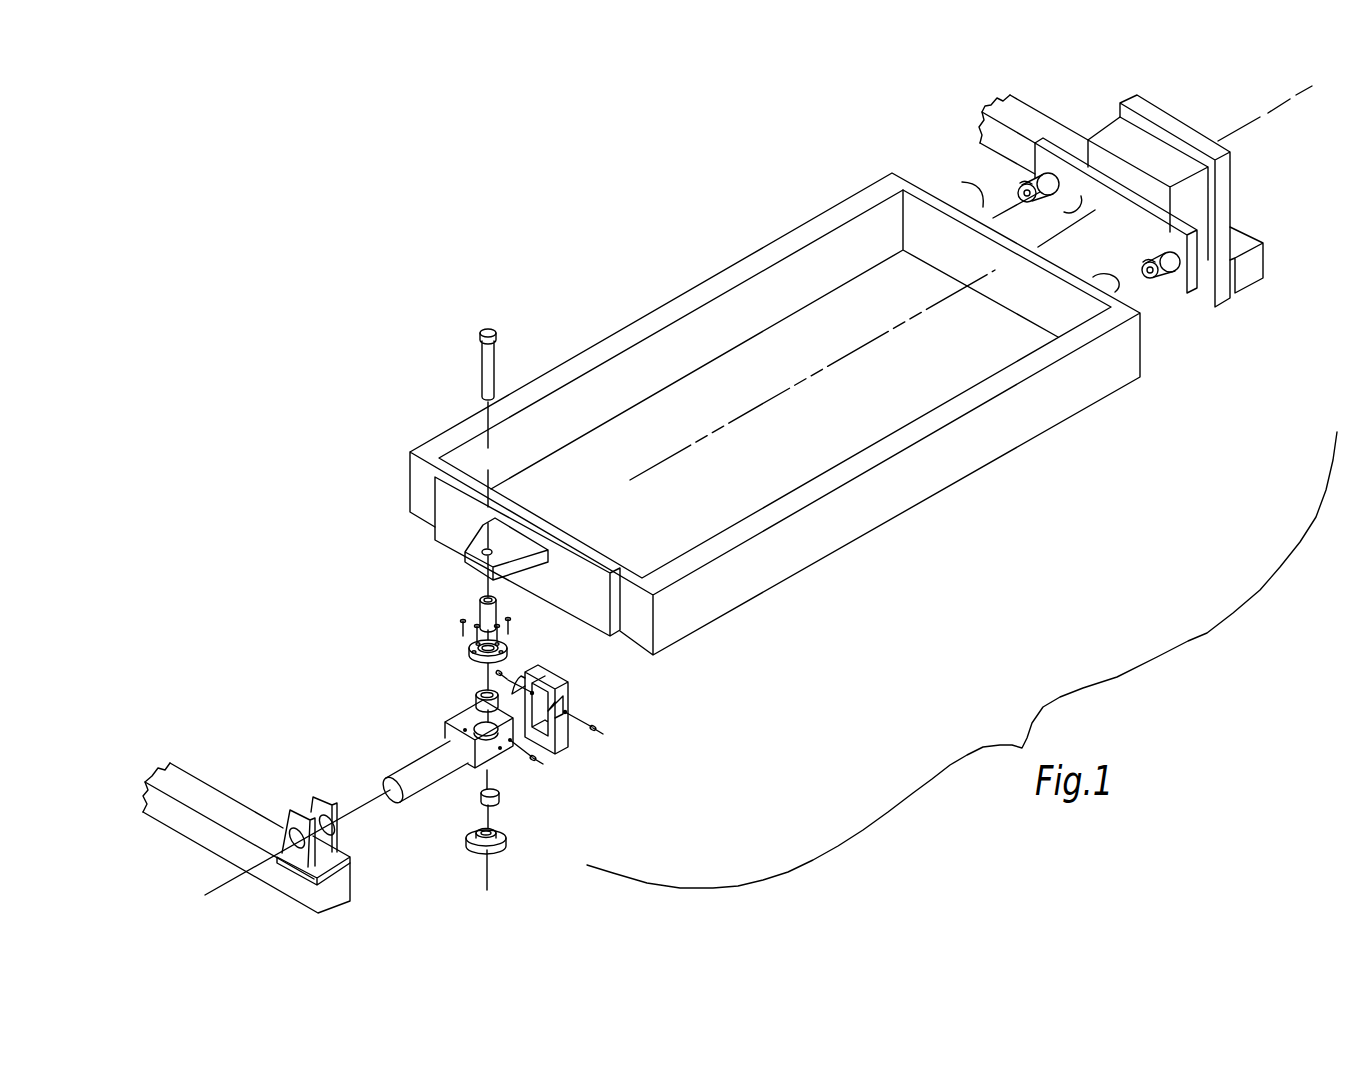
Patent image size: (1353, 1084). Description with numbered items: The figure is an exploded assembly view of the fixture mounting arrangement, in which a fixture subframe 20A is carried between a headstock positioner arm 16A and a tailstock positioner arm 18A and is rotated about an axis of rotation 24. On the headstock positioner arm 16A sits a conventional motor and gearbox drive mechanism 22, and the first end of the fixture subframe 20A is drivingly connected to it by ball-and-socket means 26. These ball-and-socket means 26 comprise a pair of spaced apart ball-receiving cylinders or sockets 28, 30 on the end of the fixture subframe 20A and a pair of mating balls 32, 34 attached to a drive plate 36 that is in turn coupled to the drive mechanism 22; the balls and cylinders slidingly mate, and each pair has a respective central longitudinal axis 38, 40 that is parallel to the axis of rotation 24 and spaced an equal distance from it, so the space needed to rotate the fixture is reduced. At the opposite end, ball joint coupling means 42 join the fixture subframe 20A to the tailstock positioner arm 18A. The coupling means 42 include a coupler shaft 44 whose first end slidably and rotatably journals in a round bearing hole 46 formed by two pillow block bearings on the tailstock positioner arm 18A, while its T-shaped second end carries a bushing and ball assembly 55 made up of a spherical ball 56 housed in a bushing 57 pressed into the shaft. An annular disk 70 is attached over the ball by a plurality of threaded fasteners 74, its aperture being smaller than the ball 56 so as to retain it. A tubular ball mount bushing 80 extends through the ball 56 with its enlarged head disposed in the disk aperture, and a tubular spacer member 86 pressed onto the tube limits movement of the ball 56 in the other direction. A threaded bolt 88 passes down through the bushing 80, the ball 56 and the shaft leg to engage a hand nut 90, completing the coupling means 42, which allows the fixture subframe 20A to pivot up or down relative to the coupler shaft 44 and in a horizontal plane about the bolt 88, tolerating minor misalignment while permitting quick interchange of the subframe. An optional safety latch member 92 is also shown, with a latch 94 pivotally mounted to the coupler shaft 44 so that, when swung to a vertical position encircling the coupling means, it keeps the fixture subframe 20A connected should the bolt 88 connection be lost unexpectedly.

The headstock positioner arm 16A is at (1020, 116).
The tailstock positioner arm 18A is at (163, 775).
The fixture subframe 20A is at (901, 518).
The motor and gearbox drive mechanism 22 is at (1198, 182).
The axis of rotation 24 is at (1248, 128).
The ball-and-socket means 26 is at (936, 126).
The ball-receiving cylinder 28 is at (1114, 272).
The ball-receiving cylinder 30 is at (988, 200).
The mating ball 32 is at (1160, 286).
The mating ball 34 is at (1020, 186).
The drive plate 36 is at (1068, 209).
The central longitudinal axis 38 is at (1140, 283).
The central longitudinal axis 40 is at (989, 195).
The ball joint coupling means 42 is at (382, 642).
The coupler shaft 44 is at (382, 756).
The round bearing hole 46 is at (278, 830).
The bushing and ball assembly 55 is at (476, 694).
The ball 56 is at (507, 687).
The bushing 57 is at (477, 701).
The annular disk 70 is at (469, 650).
The threaded fasteners 74 is at (462, 629).
The tubular ball mount bushing 80 is at (477, 617).
The tubular spacer member 86 is at (499, 798).
The threaded bolt 88 is at (481, 368).
The hand nut 90 is at (501, 846).
The safety latch member 92 is at (588, 761).
The latch 94 is at (574, 708).